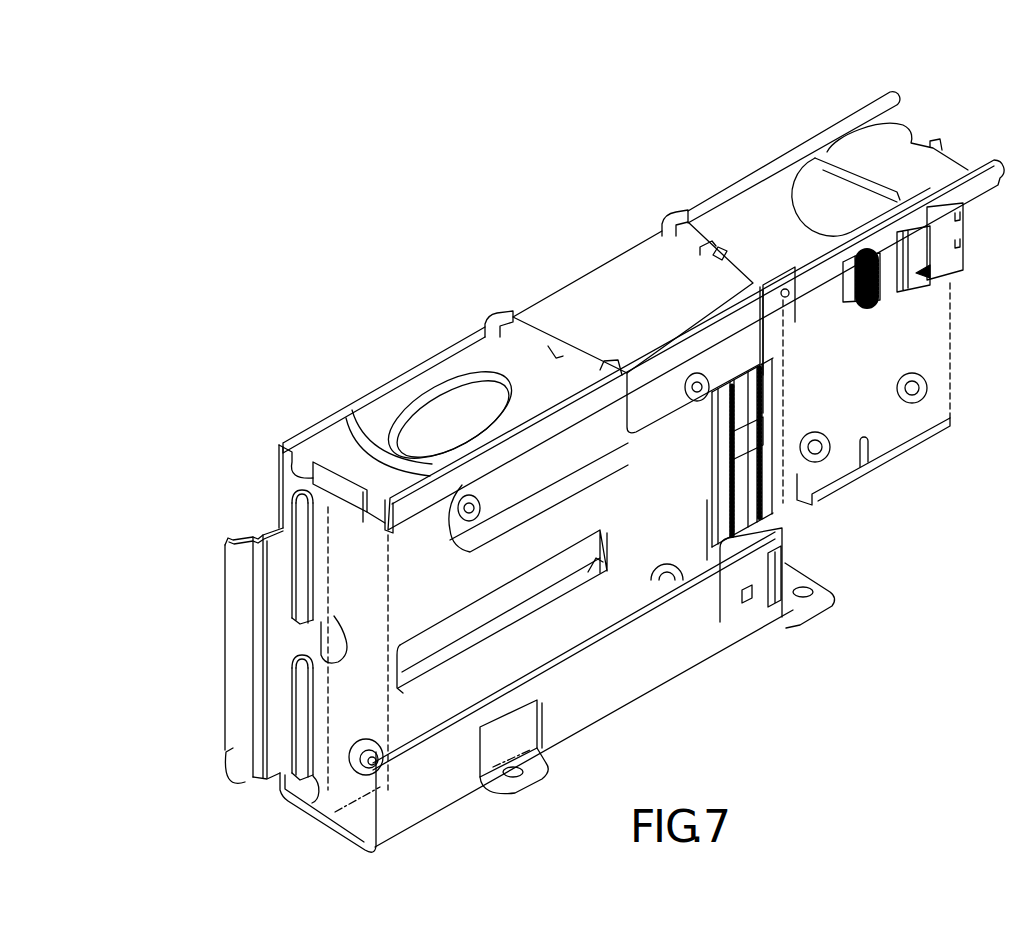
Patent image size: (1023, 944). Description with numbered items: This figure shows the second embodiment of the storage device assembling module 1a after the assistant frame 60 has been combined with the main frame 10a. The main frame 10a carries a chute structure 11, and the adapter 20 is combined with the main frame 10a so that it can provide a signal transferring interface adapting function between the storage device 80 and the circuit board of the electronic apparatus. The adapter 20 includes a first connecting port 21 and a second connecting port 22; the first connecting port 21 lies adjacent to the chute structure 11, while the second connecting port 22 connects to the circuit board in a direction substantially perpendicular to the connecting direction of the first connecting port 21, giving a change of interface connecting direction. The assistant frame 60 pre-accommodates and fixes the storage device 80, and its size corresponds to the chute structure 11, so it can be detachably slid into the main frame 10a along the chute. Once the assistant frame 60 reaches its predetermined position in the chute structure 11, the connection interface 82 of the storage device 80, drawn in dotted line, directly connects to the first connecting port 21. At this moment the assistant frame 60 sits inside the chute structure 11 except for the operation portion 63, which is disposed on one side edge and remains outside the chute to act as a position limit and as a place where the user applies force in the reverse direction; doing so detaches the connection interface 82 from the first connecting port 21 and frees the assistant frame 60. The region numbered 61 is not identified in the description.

The storage device assembling module 1a is at (185, 294).
The main frame 10a is at (603, 292).
The chute structure 11 is at (653, 670).
The adapter 20 is at (940, 335).
The first connecting port 21 is at (783, 503).
The second connecting port 22 is at (903, 428).
The assistant frame 60 is at (322, 545).
The slot 61 is at (540, 600).
The operation portion 63 is at (335, 478).
The storage device 80 is at (355, 697).
The connection interface 82 is at (717, 565).